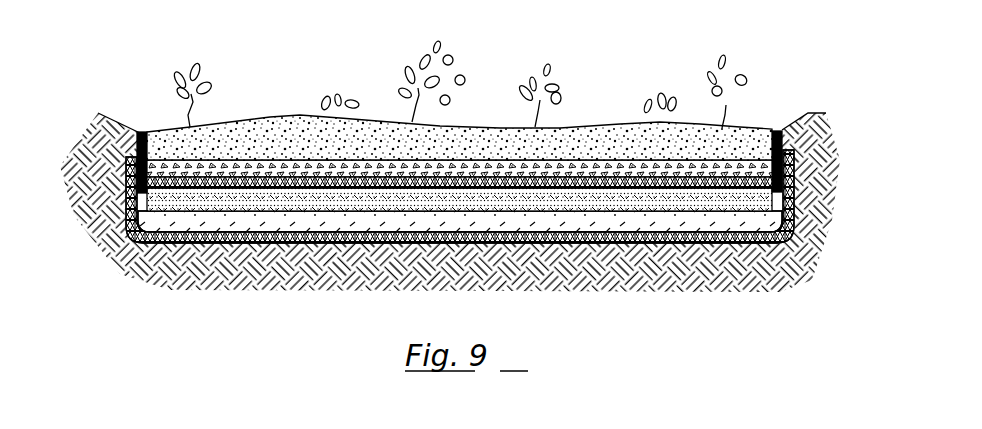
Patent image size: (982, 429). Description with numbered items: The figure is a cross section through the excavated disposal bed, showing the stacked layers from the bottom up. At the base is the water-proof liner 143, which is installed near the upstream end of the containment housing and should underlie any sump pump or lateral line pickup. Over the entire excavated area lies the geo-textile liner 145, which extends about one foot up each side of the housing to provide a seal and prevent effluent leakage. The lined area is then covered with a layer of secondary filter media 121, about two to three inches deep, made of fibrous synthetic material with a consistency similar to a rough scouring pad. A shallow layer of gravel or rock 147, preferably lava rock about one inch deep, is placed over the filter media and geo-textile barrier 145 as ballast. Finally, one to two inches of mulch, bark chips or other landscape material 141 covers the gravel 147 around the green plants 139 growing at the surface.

The secondary filter media 121 is at (475, 200).
The green plants 139 is at (550, 63).
The mulch, bark chips or other suitable landscape material 141 is at (388, 140).
The water-proof liner 143 is at (335, 243).
The geo-textile liner 145 is at (568, 178).
The layer of gravel or rock 147 is at (310, 168).